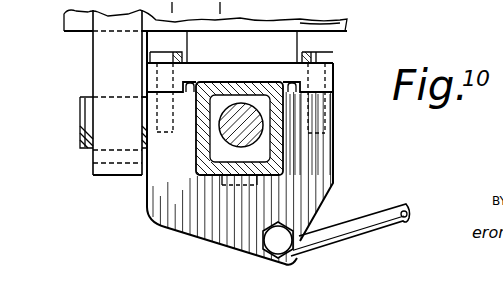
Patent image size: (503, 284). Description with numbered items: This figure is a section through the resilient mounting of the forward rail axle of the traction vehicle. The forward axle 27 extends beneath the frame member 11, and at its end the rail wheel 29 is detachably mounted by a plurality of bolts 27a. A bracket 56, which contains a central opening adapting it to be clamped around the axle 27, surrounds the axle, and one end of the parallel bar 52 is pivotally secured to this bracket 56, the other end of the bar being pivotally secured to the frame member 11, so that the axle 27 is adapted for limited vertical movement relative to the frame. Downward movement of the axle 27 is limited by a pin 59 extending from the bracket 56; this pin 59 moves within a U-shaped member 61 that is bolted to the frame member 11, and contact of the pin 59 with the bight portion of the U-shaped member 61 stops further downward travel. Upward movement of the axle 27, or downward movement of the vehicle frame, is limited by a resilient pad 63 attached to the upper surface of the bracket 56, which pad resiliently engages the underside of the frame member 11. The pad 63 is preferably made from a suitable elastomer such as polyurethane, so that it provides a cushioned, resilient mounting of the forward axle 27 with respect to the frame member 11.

The frame member 11 is at (342, 23).
The forward axle 27 is at (284, 151).
The bolts 27a is at (217, 7).
The rail wheel 29 is at (168, 7).
The parallel bar 52 is at (370, 217).
The bracket 56 is at (190, 217).
The pin 59 is at (82, 125).
The U-shaped member 61 is at (98, 65).
The resilient pad 63 is at (290, 42).